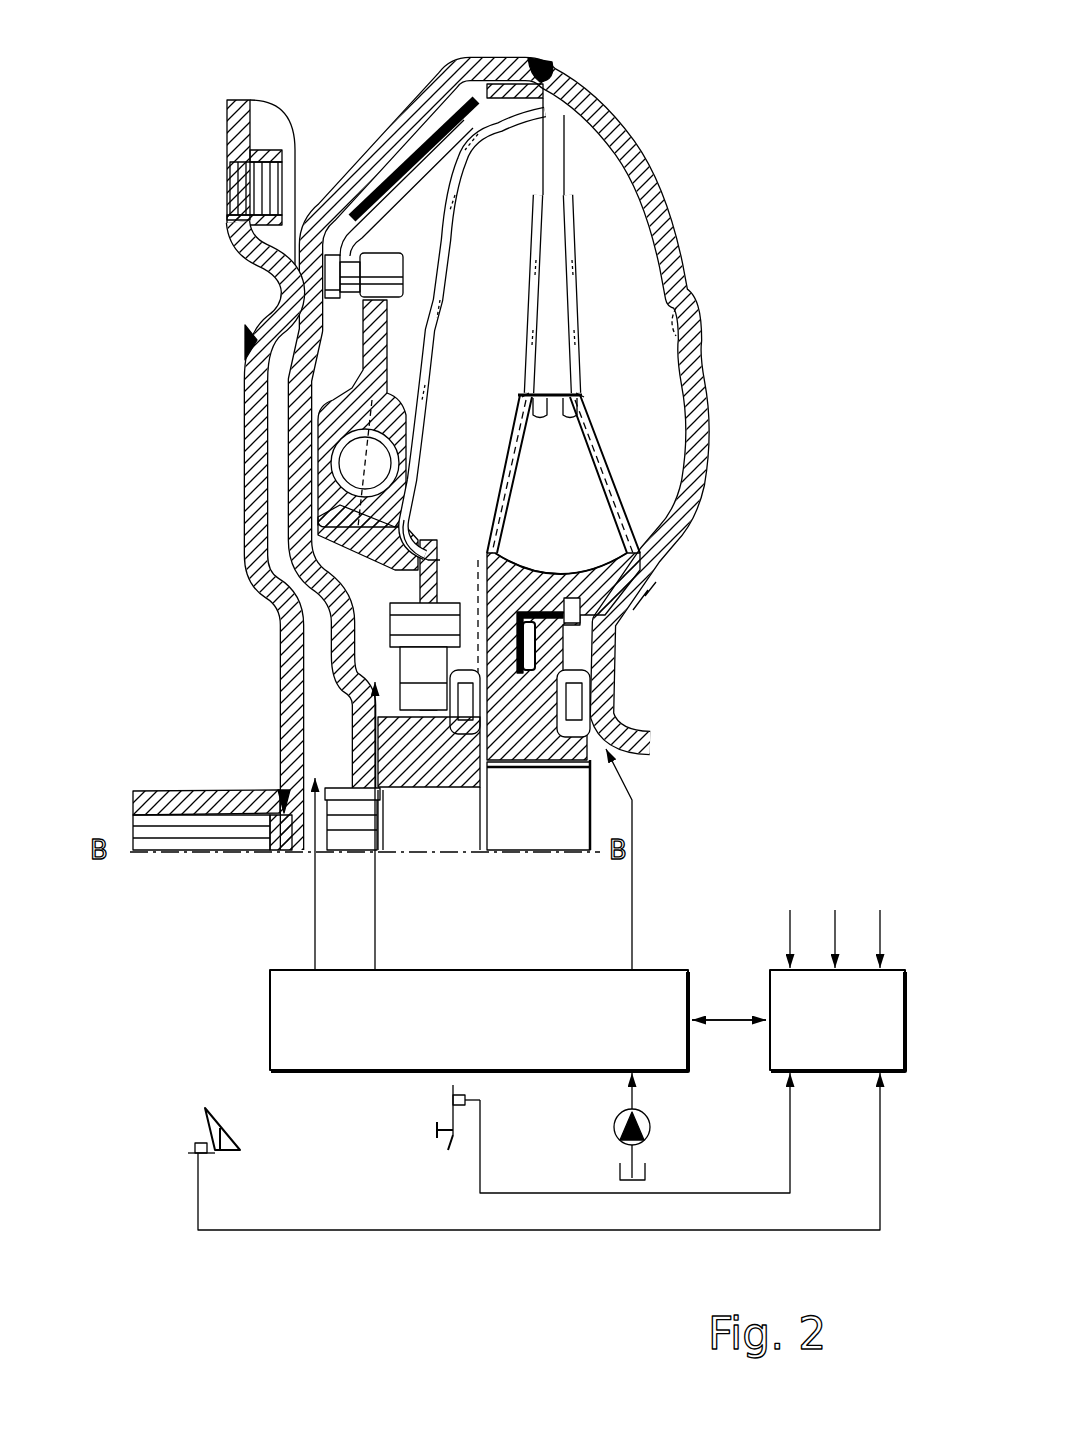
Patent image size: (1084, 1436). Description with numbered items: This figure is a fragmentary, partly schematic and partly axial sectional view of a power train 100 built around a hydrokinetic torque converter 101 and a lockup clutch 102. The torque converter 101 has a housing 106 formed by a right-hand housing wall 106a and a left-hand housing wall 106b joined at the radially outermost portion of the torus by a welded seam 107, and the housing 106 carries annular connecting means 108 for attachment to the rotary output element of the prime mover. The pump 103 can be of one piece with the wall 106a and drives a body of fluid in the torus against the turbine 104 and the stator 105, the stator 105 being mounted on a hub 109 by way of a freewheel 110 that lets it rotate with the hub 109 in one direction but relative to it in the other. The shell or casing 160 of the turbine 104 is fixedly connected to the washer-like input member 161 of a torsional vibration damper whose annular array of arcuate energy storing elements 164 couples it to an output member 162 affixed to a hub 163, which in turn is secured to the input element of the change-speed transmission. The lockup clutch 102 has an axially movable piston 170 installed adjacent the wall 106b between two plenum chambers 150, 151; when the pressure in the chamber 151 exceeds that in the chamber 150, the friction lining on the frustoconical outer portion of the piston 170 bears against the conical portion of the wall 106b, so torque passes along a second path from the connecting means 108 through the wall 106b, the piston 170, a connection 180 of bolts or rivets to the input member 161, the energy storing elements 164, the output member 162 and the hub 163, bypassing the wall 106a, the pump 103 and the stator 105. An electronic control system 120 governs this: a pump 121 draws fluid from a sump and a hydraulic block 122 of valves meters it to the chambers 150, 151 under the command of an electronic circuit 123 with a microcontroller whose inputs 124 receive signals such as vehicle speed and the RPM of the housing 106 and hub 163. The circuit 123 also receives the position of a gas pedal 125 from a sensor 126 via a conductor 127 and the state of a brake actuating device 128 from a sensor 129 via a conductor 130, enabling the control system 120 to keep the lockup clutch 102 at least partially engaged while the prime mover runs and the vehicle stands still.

The power train 100 is at (686, 98).
The hydrokinetic torque converter 101 is at (628, 268).
The lockup clutch 102 is at (407, 112).
The pump 103 is at (650, 321).
The turbine 104 is at (503, 321).
The stator 105 is at (577, 512).
The housing 106 is at (672, 180).
The right-hand housing wall 106a is at (690, 488).
The left-hand housing wall 106b is at (500, 57).
The welded seam 107 is at (538, 66).
The connecting means 108 is at (238, 120).
The hub 109 is at (553, 656).
The freewheel 110 is at (545, 633).
The electronic control system 120 is at (730, 885).
The pump 121 is at (650, 1122).
The hydraulic block 122 is at (507, 1037).
The electronic circuit 123 is at (857, 1037).
The inputs 124 is at (880, 925).
The gas pedal 125 is at (215, 1118).
The sensor 126 is at (193, 1148).
The conductor 127 is at (200, 1193).
The brake actuating device 128 is at (447, 1144).
The sensor 129 is at (465, 1100).
The conductor 130 is at (480, 1155).
The plenum chamber 150 is at (327, 708).
The plenum chamber 151 is at (365, 612).
The shell or casing 160 is at (372, 577).
The input member 161 is at (407, 508).
The output member 162 is at (400, 663).
The hub 163 is at (397, 747).
The energy storing elements 164 is at (325, 463).
The piston 170 is at (250, 375).
The connection 180 is at (378, 265).